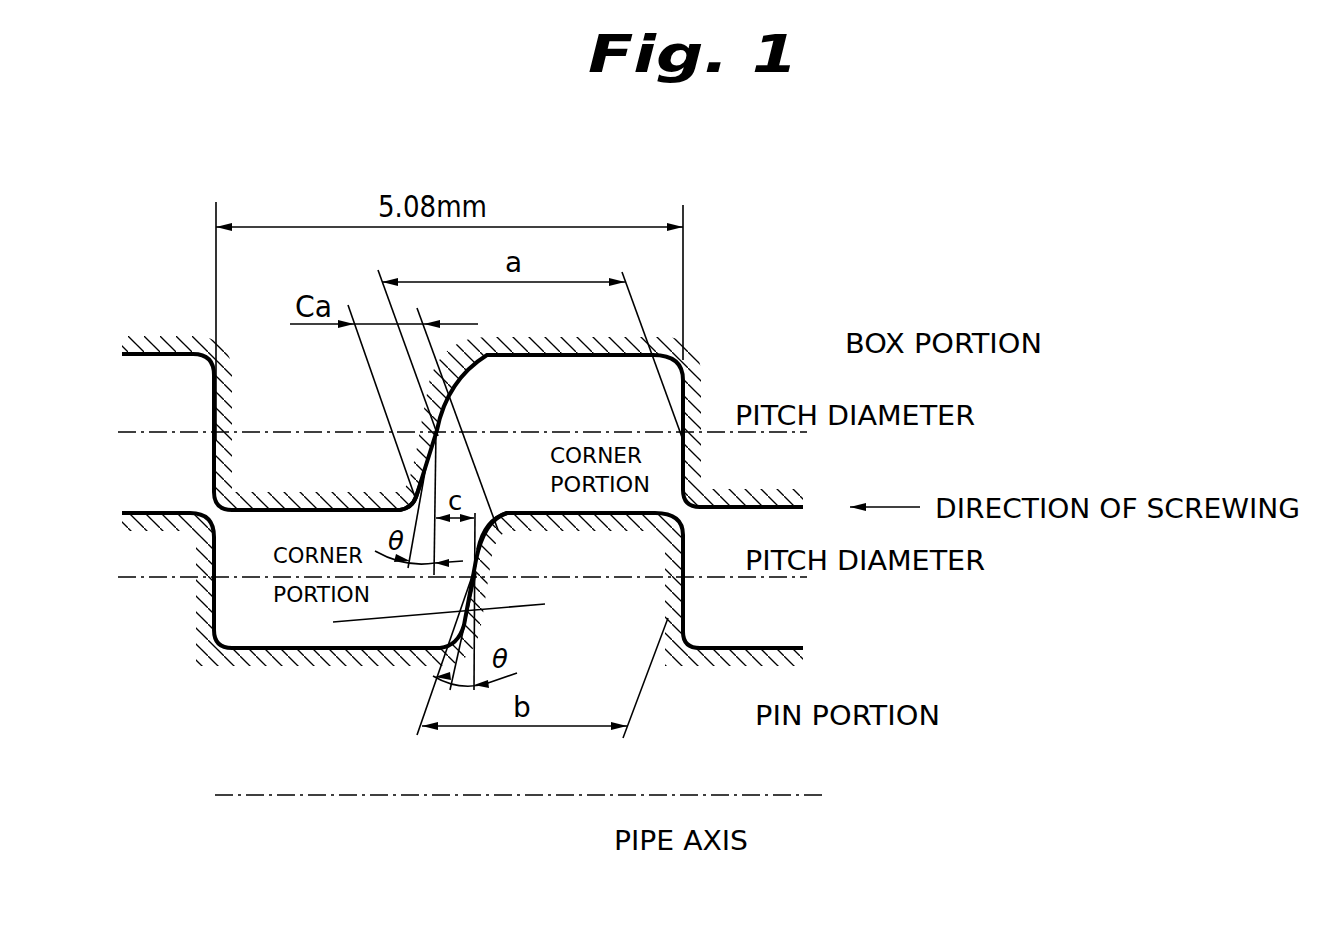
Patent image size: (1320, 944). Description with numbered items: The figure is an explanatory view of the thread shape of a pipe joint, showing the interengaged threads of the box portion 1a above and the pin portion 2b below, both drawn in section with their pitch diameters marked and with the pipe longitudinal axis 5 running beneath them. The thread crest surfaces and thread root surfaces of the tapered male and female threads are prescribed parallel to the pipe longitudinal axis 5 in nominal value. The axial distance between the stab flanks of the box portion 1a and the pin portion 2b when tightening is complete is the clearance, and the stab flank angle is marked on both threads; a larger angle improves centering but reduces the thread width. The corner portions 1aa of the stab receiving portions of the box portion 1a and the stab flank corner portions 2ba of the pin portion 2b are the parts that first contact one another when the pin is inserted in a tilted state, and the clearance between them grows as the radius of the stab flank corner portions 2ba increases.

The box portion 1a is at (718, 387).
The corner portions of the stab receiving portions of the box portion 1aa is at (405, 512).
The pin portion 2b is at (668, 677).
The stab flank corner portions of the pin portion 2ba is at (498, 524).
The pipe longitudinal axis 5 is at (533, 795).